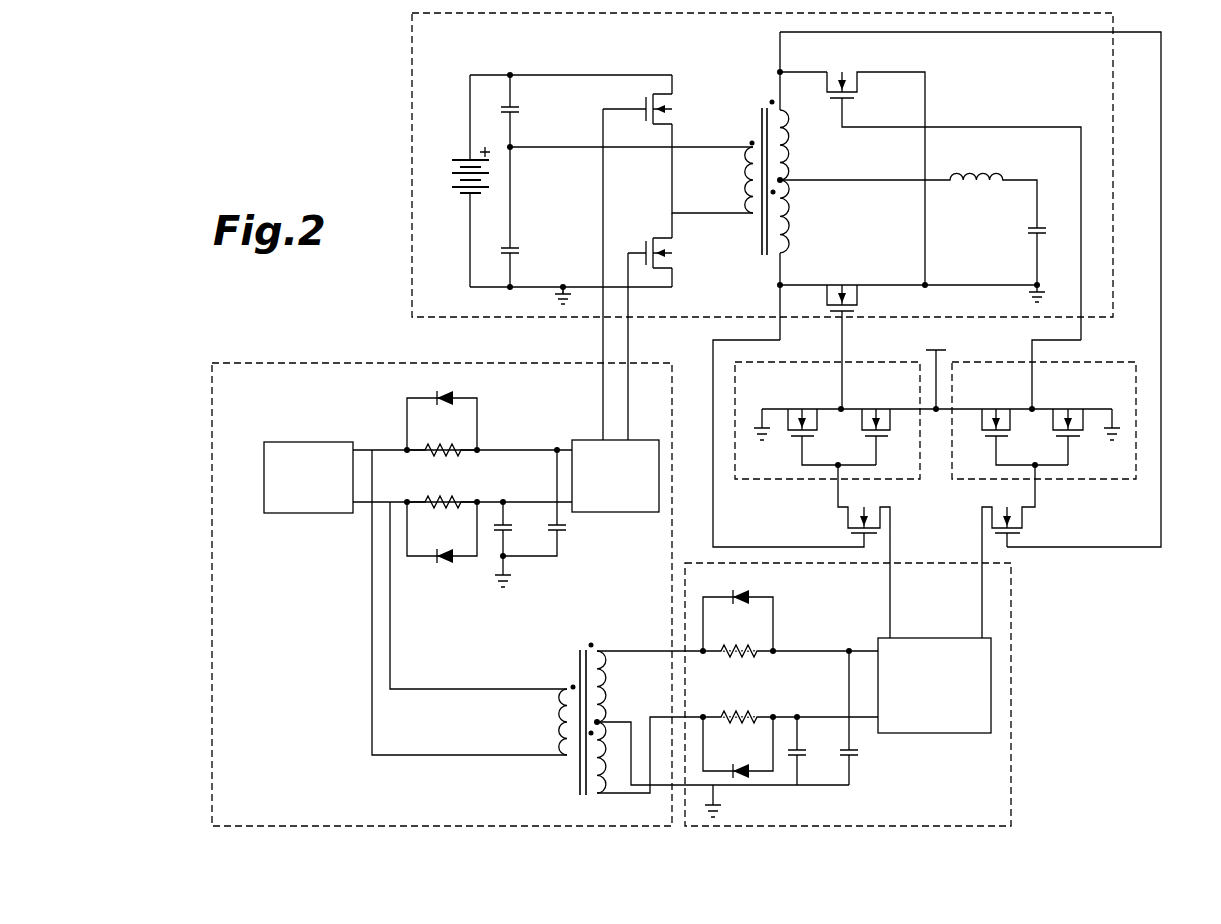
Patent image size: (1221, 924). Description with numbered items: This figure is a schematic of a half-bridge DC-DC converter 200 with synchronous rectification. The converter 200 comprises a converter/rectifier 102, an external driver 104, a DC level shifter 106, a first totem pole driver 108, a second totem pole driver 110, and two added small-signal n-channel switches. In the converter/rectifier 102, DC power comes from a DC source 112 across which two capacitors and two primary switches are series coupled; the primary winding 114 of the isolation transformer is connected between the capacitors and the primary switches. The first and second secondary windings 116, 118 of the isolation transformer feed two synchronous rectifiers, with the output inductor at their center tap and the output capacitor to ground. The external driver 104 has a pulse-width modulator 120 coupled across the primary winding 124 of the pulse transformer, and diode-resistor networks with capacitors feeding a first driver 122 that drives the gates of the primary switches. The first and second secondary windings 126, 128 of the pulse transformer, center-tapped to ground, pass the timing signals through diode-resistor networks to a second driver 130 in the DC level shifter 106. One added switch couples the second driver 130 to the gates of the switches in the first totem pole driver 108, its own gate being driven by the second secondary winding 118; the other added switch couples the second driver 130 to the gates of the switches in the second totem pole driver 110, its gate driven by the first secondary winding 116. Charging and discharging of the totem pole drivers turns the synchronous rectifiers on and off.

The half-bridge DC-DC converter 200 is at (326, 130).
The converter/rectifier 102 is at (412, 75).
The external driver 104 is at (238, 363).
The DC level shifter 106 is at (1010, 622).
The first totem pole driver 108 is at (735, 378).
The second totem pole driver 110 is at (1136, 390).
The DC source 112 is at (455, 190).
The primary winding 114 is at (743, 132).
The first secondary winding 116 is at (765, 97).
The second secondary winding 118 is at (762, 262).
The pulse-width modulator 120 is at (335, 442).
The first driver 122 is at (590, 440).
The primary winding 124 is at (558, 676).
The first secondary winding 126 is at (600, 628).
The second secondary winding 128 is at (578, 802).
The second driver 130 is at (945, 638).